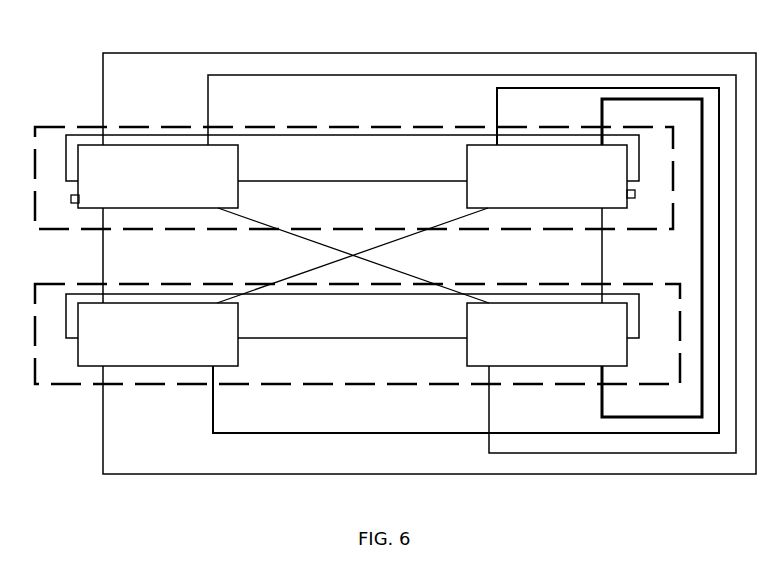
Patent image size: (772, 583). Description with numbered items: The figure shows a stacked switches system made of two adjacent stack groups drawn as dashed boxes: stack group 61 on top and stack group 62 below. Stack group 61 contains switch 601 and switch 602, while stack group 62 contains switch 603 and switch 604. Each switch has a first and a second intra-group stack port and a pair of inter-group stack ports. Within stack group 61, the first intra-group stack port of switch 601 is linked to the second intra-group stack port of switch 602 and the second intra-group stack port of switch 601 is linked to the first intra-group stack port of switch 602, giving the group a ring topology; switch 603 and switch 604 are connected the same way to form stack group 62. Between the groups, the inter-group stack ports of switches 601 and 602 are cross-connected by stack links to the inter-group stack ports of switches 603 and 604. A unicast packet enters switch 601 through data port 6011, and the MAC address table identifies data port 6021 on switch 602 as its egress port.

The stack group 61 is at (82, 127).
The stack group 62 is at (82, 284).
The switch 601 is at (159, 176).
The switch 602 is at (547, 176).
The switch 603 is at (159, 334).
The switch 604 is at (547, 334).
The data port 6011 is at (71, 199).
The data port 6021 is at (636, 194).